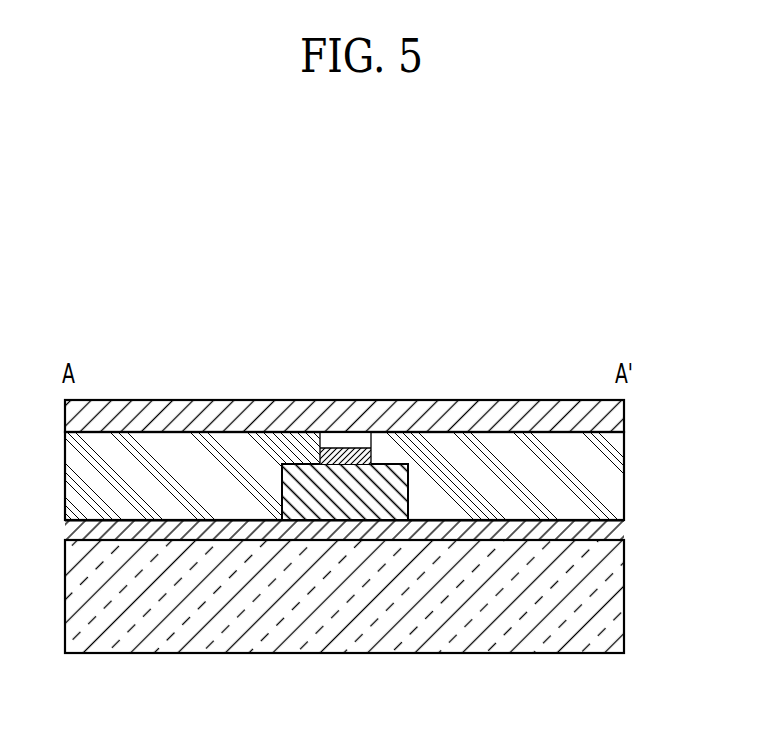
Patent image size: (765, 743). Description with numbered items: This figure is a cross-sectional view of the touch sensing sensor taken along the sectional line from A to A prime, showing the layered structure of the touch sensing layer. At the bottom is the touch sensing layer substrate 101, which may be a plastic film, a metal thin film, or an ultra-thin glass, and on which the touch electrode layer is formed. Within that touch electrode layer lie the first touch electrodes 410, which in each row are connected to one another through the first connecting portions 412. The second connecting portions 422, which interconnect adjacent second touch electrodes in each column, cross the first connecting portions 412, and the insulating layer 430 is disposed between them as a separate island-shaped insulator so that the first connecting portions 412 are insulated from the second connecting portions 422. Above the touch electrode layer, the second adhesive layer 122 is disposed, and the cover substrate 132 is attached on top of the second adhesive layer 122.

The touch sensing layer substrate 101 is at (608, 595).
The second adhesive layer 122 is at (608, 477).
The cover substrate 132 is at (610, 416).
The first touch electrodes 410 is at (610, 528).
The first connecting portions 412 is at (347, 550).
The second connecting portions 422 is at (335, 453).
The insulating layer 430 is at (389, 477).